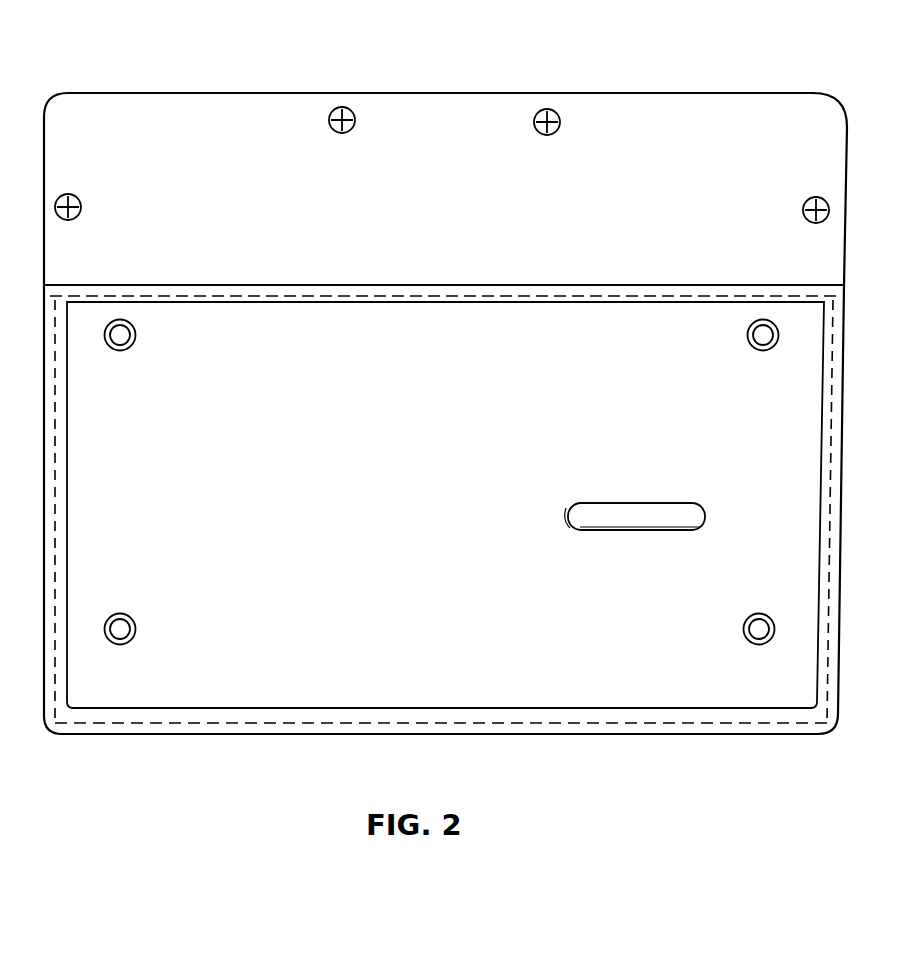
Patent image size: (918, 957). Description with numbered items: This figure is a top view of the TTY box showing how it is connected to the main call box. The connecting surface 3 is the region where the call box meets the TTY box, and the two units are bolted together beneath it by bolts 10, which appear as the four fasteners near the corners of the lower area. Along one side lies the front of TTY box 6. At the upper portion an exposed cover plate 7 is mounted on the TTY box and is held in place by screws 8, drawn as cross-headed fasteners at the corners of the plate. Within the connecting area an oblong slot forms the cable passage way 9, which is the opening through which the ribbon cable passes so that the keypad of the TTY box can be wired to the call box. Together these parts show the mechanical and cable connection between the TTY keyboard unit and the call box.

The connection between call box and TTY box 3 is at (143, 733).
The front of TTY box 6 is at (745, 737).
The cover plate of TTY box 7 is at (229, 100).
The screws to attach cover plate 8 is at (332, 130).
The cable passage way 9 is at (568, 525).
The bolts connecting call box to TTY box 10 is at (750, 347).